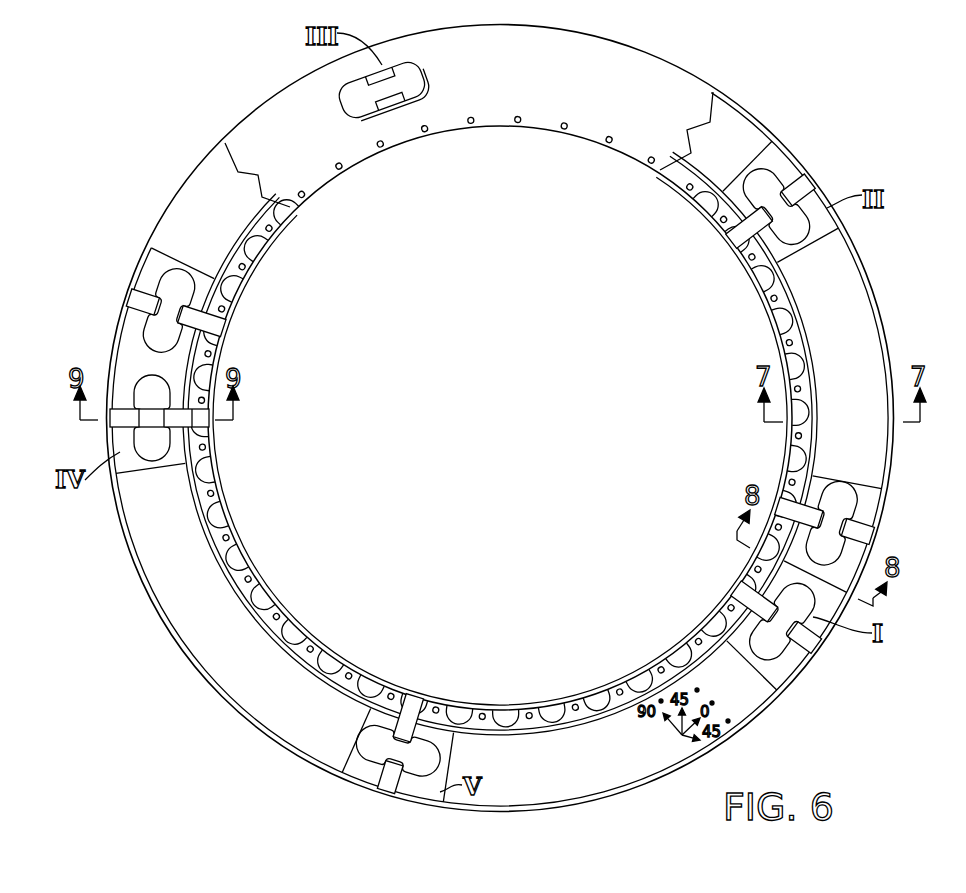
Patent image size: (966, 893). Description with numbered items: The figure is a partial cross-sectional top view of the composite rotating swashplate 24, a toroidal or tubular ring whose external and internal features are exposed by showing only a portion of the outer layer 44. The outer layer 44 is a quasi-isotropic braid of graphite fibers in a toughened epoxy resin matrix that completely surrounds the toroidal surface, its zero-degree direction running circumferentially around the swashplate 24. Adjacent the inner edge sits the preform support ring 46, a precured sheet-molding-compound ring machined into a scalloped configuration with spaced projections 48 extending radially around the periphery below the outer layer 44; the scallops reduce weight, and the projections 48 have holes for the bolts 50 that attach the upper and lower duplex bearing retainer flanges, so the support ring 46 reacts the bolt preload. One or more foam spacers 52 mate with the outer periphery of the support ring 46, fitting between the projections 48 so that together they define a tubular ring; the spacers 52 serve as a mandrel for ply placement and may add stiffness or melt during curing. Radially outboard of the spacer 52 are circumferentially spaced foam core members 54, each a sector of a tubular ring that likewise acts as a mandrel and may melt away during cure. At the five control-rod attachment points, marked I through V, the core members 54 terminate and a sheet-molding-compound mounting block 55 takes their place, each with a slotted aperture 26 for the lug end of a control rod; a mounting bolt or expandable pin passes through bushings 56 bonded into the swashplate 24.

The rotating swashplate 24 is at (690, 72).
The slotted aperture 26 is at (770, 650).
The outer layer 44 is at (551, 77).
The preform support ring 46 is at (530, 714).
The projections 48 is at (577, 728).
The bolts 50 is at (606, 700).
The spacers 52 is at (323, 676).
The core members 54 is at (734, 123).
The mounting block 55 is at (772, 160).
The bushings 56 is at (394, 708).